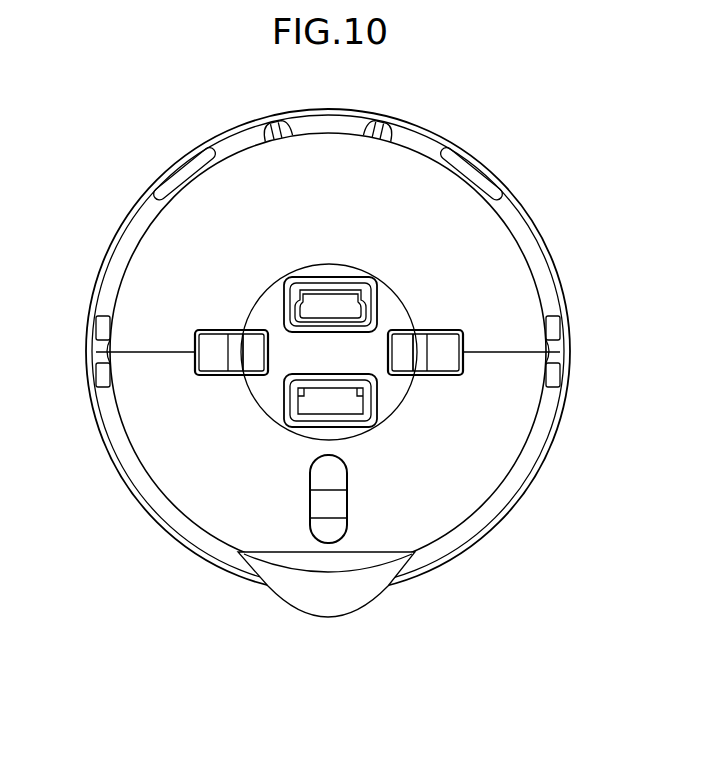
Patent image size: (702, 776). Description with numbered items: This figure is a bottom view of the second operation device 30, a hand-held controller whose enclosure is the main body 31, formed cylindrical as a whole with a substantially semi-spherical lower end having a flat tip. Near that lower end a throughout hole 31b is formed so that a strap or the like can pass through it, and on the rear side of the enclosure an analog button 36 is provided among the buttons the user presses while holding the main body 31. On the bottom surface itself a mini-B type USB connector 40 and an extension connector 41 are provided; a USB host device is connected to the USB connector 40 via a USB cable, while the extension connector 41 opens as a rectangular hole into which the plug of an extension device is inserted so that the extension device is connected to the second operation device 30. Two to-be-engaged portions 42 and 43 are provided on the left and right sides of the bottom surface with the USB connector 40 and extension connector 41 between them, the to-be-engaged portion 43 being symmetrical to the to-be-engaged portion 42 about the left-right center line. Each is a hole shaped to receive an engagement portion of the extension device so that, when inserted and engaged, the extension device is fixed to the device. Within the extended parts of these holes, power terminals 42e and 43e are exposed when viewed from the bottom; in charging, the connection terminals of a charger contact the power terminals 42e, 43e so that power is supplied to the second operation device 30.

The second operation device 30 is at (334, 405).
The main body 31 is at (208, 518).
The throughout hole 31b is at (355, 453).
The analog button 36 is at (352, 605).
The USB connector 40 is at (335, 277).
The extension connector 41 is at (380, 398).
The to-be-engaged portion 42 is at (462, 330).
The power terminal 42e is at (415, 326).
The to-be-engaged portion 43 is at (200, 330).
The power terminal 43e is at (258, 326).